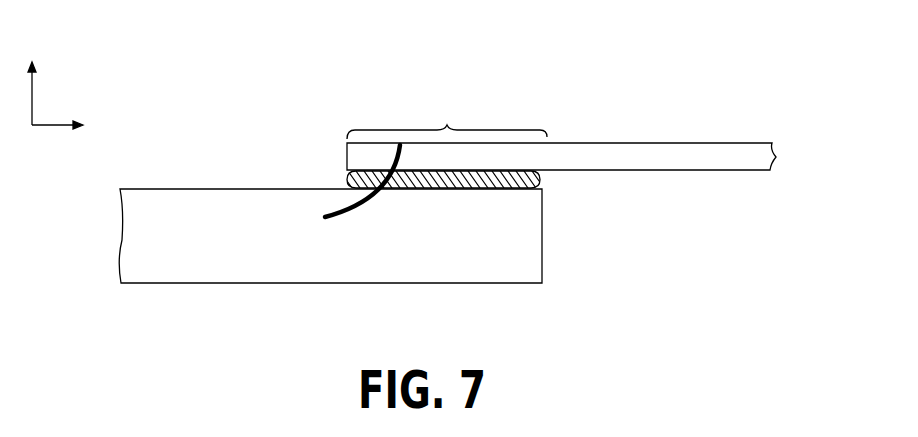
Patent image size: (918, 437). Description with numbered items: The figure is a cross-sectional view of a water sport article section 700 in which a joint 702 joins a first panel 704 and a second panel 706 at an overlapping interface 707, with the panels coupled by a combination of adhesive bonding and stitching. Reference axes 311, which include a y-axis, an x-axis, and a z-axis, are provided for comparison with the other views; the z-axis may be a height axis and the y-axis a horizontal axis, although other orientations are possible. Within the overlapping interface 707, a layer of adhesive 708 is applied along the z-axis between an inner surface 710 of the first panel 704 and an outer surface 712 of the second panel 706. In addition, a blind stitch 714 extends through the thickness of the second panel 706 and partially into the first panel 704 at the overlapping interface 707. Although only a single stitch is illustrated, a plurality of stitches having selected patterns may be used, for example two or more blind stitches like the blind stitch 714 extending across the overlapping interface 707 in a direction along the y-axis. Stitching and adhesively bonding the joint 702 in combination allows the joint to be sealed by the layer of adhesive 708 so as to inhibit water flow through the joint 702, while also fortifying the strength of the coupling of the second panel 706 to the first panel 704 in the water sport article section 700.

The water sport article section 700 is at (723, 49).
The reference axes 311 is at (62, 74).
The joint 702 is at (450, 88).
The first panel 704 is at (330, 236).
The second panel 706 is at (561, 156).
The overlapping interface 707 is at (447, 121).
The layer of adhesive 708 is at (466, 189).
The inner surface 710 is at (553, 172).
The outer surface 712 is at (328, 188).
The blind stitch 714 is at (355, 207).